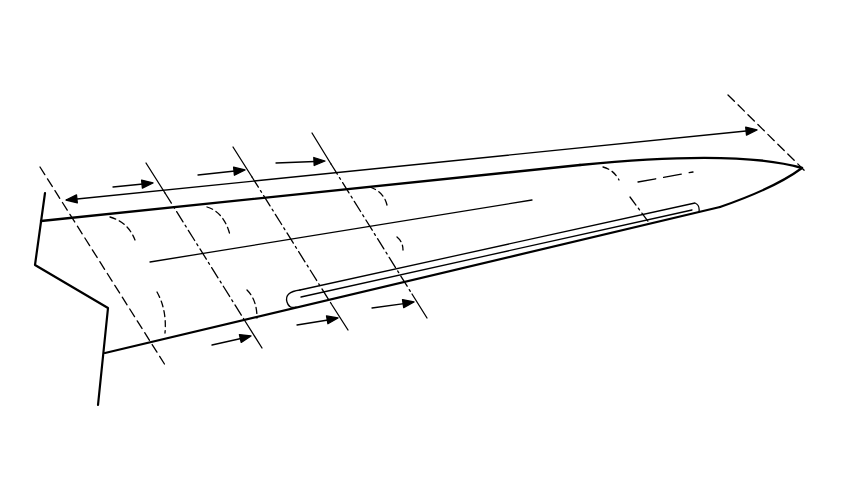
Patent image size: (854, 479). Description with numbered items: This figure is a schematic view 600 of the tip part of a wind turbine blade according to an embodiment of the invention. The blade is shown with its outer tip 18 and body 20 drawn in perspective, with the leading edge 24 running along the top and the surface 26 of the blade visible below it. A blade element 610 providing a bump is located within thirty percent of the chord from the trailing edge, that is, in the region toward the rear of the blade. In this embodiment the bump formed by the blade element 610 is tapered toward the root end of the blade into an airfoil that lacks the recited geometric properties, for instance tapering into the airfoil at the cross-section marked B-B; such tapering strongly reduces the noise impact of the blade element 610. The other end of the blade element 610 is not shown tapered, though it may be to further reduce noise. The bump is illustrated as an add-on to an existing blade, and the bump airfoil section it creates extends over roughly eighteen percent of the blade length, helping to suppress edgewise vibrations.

The rotor blade assembly view 600 is at (153, 32).
The blade tip 18 is at (695, 158).
The rotor blade 20 is at (728, 203).
The leading edge 24 is at (402, 193).
The pressure side surface 26 is at (462, 187).
The blade element 610 is at (512, 255).